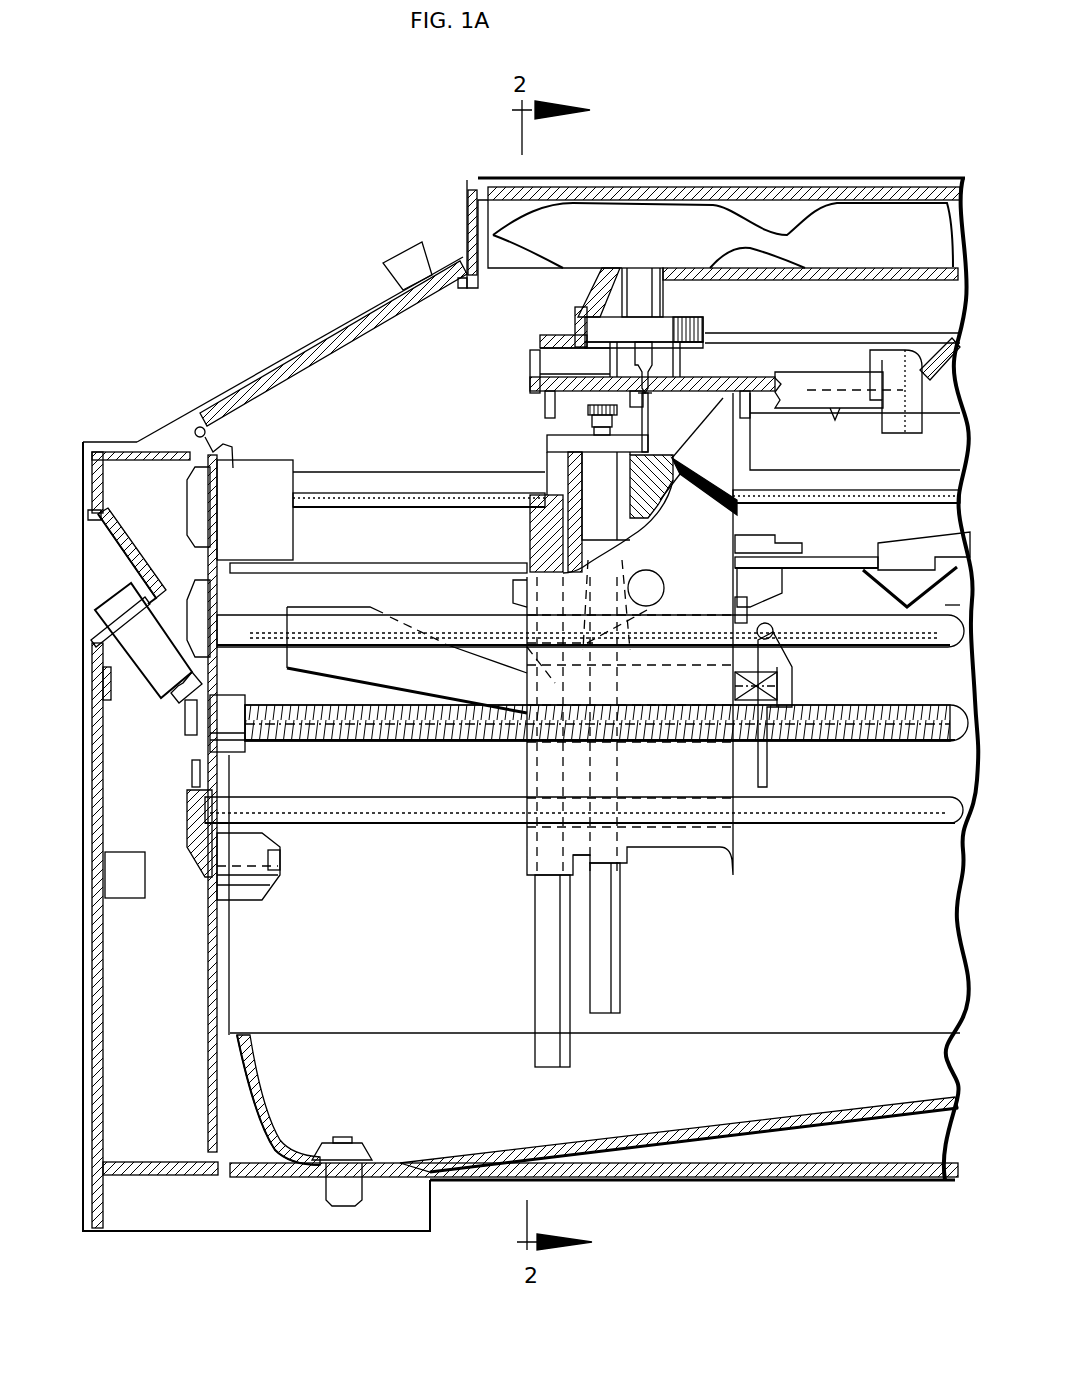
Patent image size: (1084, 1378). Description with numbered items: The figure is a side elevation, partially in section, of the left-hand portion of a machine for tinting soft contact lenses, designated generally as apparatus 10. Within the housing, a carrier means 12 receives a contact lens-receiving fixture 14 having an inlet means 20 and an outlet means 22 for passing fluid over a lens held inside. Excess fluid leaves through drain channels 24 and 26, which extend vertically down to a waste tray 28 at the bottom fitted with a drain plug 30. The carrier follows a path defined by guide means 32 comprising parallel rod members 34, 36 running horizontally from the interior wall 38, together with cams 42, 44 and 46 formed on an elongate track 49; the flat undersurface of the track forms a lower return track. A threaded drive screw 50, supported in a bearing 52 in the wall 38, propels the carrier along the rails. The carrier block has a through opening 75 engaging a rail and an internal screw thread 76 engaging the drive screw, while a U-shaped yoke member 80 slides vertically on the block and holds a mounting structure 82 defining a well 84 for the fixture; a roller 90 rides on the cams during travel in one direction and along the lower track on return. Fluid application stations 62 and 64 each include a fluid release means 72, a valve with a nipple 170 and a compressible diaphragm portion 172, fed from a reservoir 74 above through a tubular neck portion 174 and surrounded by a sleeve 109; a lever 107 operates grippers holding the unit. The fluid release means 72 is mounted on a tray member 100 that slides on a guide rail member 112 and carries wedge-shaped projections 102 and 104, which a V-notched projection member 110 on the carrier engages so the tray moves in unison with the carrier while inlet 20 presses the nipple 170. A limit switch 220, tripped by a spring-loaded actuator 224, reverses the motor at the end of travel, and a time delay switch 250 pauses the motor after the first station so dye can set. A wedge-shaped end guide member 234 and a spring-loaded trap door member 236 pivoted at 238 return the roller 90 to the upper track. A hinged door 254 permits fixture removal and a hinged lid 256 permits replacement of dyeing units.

The apparatus 10 is at (212, 258).
The carrier means 12 is at (520, 848).
The contact lens-receiving fixture 14 is at (640, 490).
The inlet means 20 is at (658, 418).
The outlet means 22 is at (545, 462).
The drain channel 24 is at (535, 933).
The drain channel 26 is at (612, 962).
The tray 28 is at (532, 1133).
The drain plug 30 is at (358, 1142).
The guide means 32 is at (382, 836).
The rod member 34 is at (258, 630).
The rod member 36 is at (330, 806).
The interior wall 38 is at (218, 975).
The cam 42 is at (733, 645).
The cam 44 is at (815, 635).
The cam 46 is at (945, 588).
The track 49 is at (912, 665).
The drive screw 50 is at (470, 712).
The bearing 52 is at (240, 745).
The fluid application station 62 is at (576, 288).
The fluid application station 64 is at (830, 352).
The fluid release means 72 is at (600, 358).
The reservoir 74 is at (652, 238).
The through opening 75 is at (690, 805).
The internal through screw thread 76 is at (700, 712).
The yoke member 80 is at (678, 848).
The mounting structure 82 is at (655, 460).
The well 84 is at (580, 528).
The roller 90 is at (646, 582).
The tray member 100 is at (520, 375).
The projection 102 is at (755, 425).
The projection 104 is at (897, 438).
The lever 107 is at (935, 345).
The sleeve 109 is at (700, 348).
The projection member 110 is at (753, 452).
The guide rail member 112 is at (338, 480).
The nipple 170 is at (655, 382).
The diaphragm portion 172 is at (700, 333).
The neck portion 174 is at (664, 290).
The limit switch 220 is at (262, 900).
The spring-loaded actuator 224 is at (782, 685).
The end guide member 234 is at (400, 675).
The trap door member 236 is at (505, 645).
The pivot 238 is at (527, 683).
The time delay switch 250 is at (775, 540).
The hinged door 254 is at (255, 395).
The hinged lid 256 is at (632, 178).